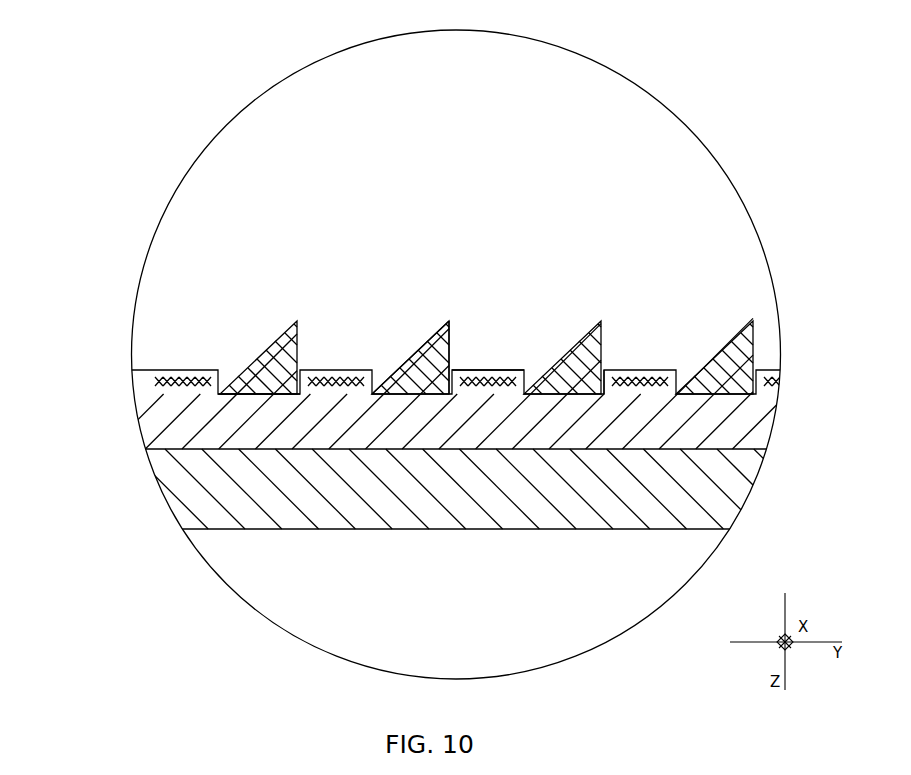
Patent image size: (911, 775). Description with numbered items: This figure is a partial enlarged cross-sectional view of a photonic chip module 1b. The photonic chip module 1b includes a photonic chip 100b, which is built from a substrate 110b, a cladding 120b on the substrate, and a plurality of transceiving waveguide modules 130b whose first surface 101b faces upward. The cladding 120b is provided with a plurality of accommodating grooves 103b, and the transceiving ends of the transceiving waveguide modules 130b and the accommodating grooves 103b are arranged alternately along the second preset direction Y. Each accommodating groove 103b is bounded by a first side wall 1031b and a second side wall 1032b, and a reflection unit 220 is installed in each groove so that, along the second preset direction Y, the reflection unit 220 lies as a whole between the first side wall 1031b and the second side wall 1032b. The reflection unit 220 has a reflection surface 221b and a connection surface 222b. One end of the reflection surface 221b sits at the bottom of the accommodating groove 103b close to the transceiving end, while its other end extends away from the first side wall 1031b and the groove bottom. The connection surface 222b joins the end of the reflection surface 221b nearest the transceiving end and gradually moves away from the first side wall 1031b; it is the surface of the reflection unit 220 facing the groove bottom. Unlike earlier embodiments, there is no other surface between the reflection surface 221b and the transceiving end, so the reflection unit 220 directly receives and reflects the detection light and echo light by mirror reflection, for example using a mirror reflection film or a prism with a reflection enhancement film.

The photonic chip module 1b is at (98, 42).
The photonic chip 100b is at (449, 453).
The substrate 110b is at (198, 462).
The cladding 120b is at (183, 420).
The transceiving waveguide module 130b is at (450, 362).
The first surface 101b is at (185, 372).
The accommodating groove 103b is at (231, 371).
The first side wall 1031b is at (515, 372).
The second side wall 1032b is at (608, 370).
The reflection unit 220 is at (486, 333).
The reflection surface 221b is at (433, 345).
The connection surface 222b is at (400, 368).